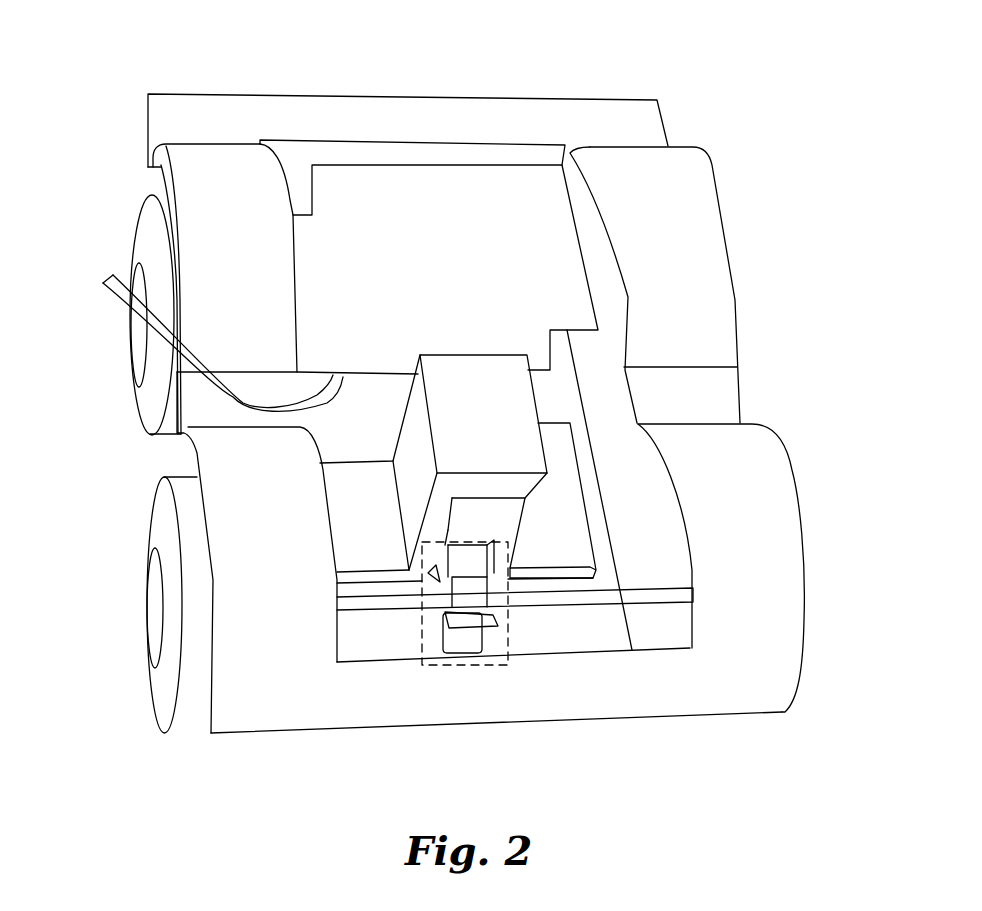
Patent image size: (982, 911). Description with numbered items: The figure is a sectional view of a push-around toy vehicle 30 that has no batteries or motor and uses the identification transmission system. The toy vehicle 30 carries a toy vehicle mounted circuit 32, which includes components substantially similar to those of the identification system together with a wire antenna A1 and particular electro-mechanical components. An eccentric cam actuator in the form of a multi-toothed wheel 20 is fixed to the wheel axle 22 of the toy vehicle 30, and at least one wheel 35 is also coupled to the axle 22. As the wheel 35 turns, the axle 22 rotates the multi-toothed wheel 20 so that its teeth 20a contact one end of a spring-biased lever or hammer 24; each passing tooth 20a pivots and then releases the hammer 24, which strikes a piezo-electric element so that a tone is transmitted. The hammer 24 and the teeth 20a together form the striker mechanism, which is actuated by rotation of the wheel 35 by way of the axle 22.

The toy vehicle 30 is at (596, 78).
The toy vehicle mounted circuit 32 is at (462, 164).
The hammer 24 is at (490, 532).
The wheel axle 22 is at (575, 598).
The multi-toothed wheel 20 is at (461, 667).
The teeth 20a is at (493, 627).
The wheel 35 is at (165, 692).
The wire antenna A1 is at (107, 283).